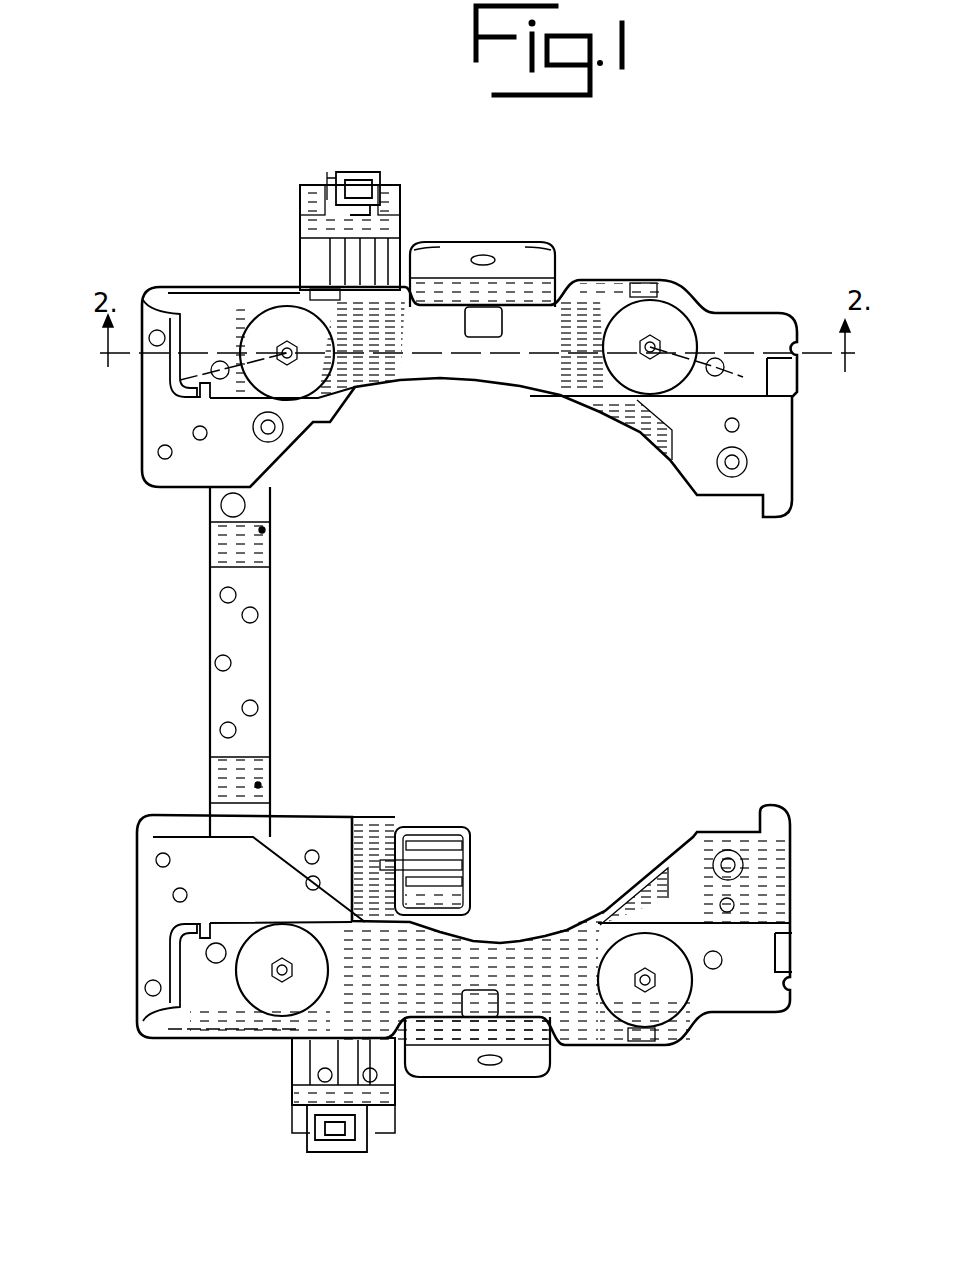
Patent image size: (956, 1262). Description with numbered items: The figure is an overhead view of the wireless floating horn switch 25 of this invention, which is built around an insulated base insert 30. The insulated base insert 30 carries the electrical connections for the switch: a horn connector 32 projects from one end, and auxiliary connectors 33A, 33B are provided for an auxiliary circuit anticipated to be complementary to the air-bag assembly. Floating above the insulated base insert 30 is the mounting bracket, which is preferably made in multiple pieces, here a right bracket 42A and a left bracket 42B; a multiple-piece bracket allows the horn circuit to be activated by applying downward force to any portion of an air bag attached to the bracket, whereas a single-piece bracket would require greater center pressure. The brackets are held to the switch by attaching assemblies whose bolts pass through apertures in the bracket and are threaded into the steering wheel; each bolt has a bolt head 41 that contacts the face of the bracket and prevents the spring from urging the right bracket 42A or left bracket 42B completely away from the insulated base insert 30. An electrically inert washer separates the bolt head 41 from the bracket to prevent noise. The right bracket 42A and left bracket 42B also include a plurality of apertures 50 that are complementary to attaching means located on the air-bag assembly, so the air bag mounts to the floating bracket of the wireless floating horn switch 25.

The insulated base insert 30 is at (146, 430).
The wireless floating horn switch 25 is at (210, 645).
The auxiliary connector 33A is at (400, 193).
The auxiliary connector 33B is at (447, 827).
The horn connector 32 is at (390, 1130).
The apertures 50 is at (497, 260).
The bolt head 41 is at (690, 330).
The right bracket 42A is at (617, 290).
The left bracket 42B is at (607, 1047).